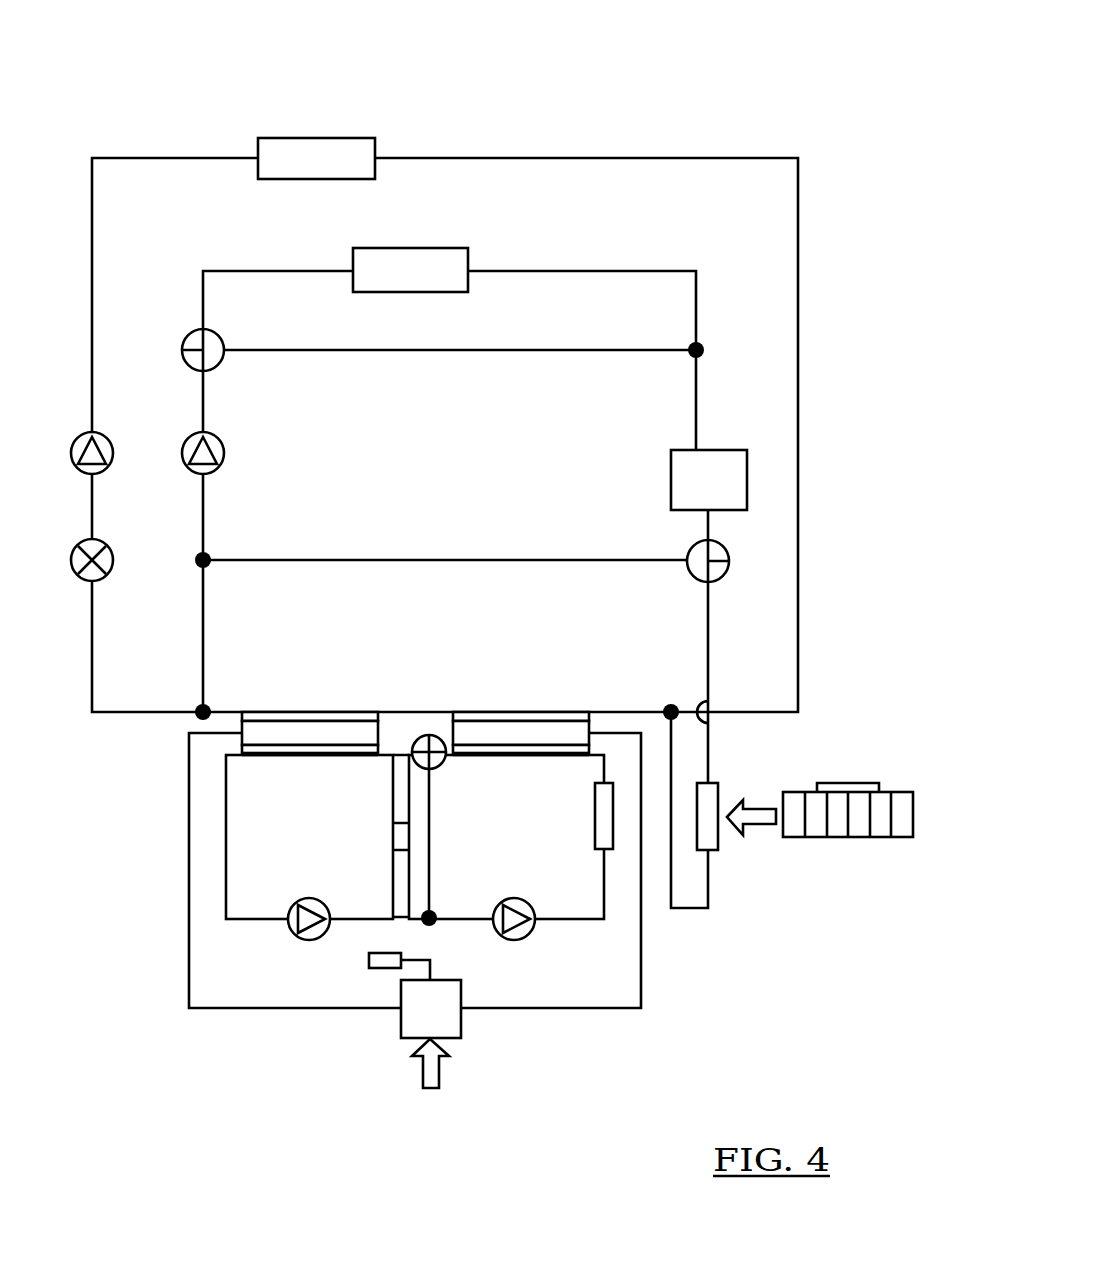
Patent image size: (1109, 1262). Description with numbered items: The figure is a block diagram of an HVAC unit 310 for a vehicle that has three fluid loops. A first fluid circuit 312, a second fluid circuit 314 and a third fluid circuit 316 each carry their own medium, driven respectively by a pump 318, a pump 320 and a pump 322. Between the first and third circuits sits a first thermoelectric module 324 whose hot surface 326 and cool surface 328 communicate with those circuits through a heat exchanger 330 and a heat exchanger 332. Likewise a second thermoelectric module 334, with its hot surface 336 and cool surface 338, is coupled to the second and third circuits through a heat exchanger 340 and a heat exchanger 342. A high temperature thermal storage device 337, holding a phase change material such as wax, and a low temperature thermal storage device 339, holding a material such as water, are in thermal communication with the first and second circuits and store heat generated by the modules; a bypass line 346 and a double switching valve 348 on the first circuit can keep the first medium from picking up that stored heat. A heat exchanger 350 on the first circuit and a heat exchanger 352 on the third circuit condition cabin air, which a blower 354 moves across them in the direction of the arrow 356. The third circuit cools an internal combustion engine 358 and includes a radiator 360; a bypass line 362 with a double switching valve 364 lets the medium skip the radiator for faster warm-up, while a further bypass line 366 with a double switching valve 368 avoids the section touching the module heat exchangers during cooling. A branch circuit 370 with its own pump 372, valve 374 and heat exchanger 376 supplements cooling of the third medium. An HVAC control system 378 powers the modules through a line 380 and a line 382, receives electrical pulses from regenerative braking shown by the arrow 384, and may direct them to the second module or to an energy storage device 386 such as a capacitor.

The HVAC unit 310 is at (797, 83).
The first fluid circuit 312 is at (583, 923).
The second fluid circuit 314 is at (231, 897).
The third fluid circuit 316 is at (210, 531).
The pump 318 is at (526, 940).
The pump 320 is at (292, 932).
The pump 322 is at (225, 448).
The first thermoelectric module 324 is at (560, 750).
The hot surface 326 is at (545, 758).
The cool surface 328 is at (528, 730).
The heat exchanger 330 is at (487, 758).
The heat exchanger 332 is at (470, 712).
The second thermoelectric module 334 is at (350, 750).
The hot surface 336 is at (334, 757).
The high temperature thermal storage device 337 is at (394, 816).
The cool surface 338 is at (318, 730).
The low temperature thermal storage device 339 is at (394, 871).
The heat exchanger 340 is at (268, 758).
The heat exchanger 342 is at (262, 712).
The bypass line 346 is at (434, 850).
The double switching valve 348 is at (441, 768).
The heat exchanger 350 is at (592, 825).
The heat exchanger 352 is at (720, 791).
The blower 354 is at (905, 792).
The arrow 356 is at (756, 826).
The internal combustion engine 358 is at (727, 450).
The radiator 360 is at (437, 248).
The bypass line 362 is at (481, 350).
The double switching valve 364 is at (223, 340).
The bypass line 366 is at (446, 559).
The double switching valve 368 is at (723, 576).
The branch circuit 370 is at (93, 290).
The pump 372 is at (107, 441).
The valve 374 is at (110, 553).
The heat exchanger 376 is at (332, 138).
The HVAC control system 378 is at (463, 1025).
The line 380 is at (620, 1010).
The line 382 is at (231, 1010).
The arrow 384 is at (415, 1065).
The energy storage device 386 is at (367, 961).